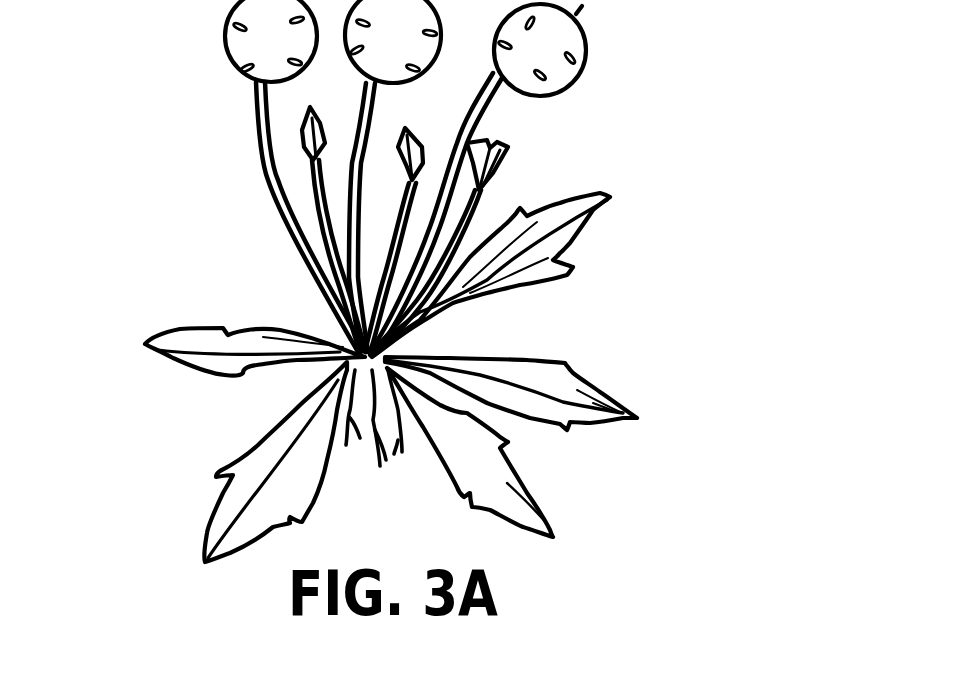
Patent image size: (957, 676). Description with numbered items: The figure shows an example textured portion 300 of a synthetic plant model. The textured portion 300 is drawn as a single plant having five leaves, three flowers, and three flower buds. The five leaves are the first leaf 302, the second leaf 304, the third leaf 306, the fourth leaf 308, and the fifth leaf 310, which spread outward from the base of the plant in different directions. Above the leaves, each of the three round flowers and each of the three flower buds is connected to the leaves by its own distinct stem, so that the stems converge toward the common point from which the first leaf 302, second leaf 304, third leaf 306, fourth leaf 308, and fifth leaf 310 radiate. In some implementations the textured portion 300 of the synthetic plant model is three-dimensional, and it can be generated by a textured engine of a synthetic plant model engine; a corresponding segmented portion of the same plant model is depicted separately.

The textured portion 300 is at (685, 160).
The first leaf 302 is at (202, 343).
The second leaf 304 is at (252, 477).
The third leaf 306 is at (550, 240).
The fourth leaf 308 is at (640, 415).
The fifth leaf 310 is at (525, 490).